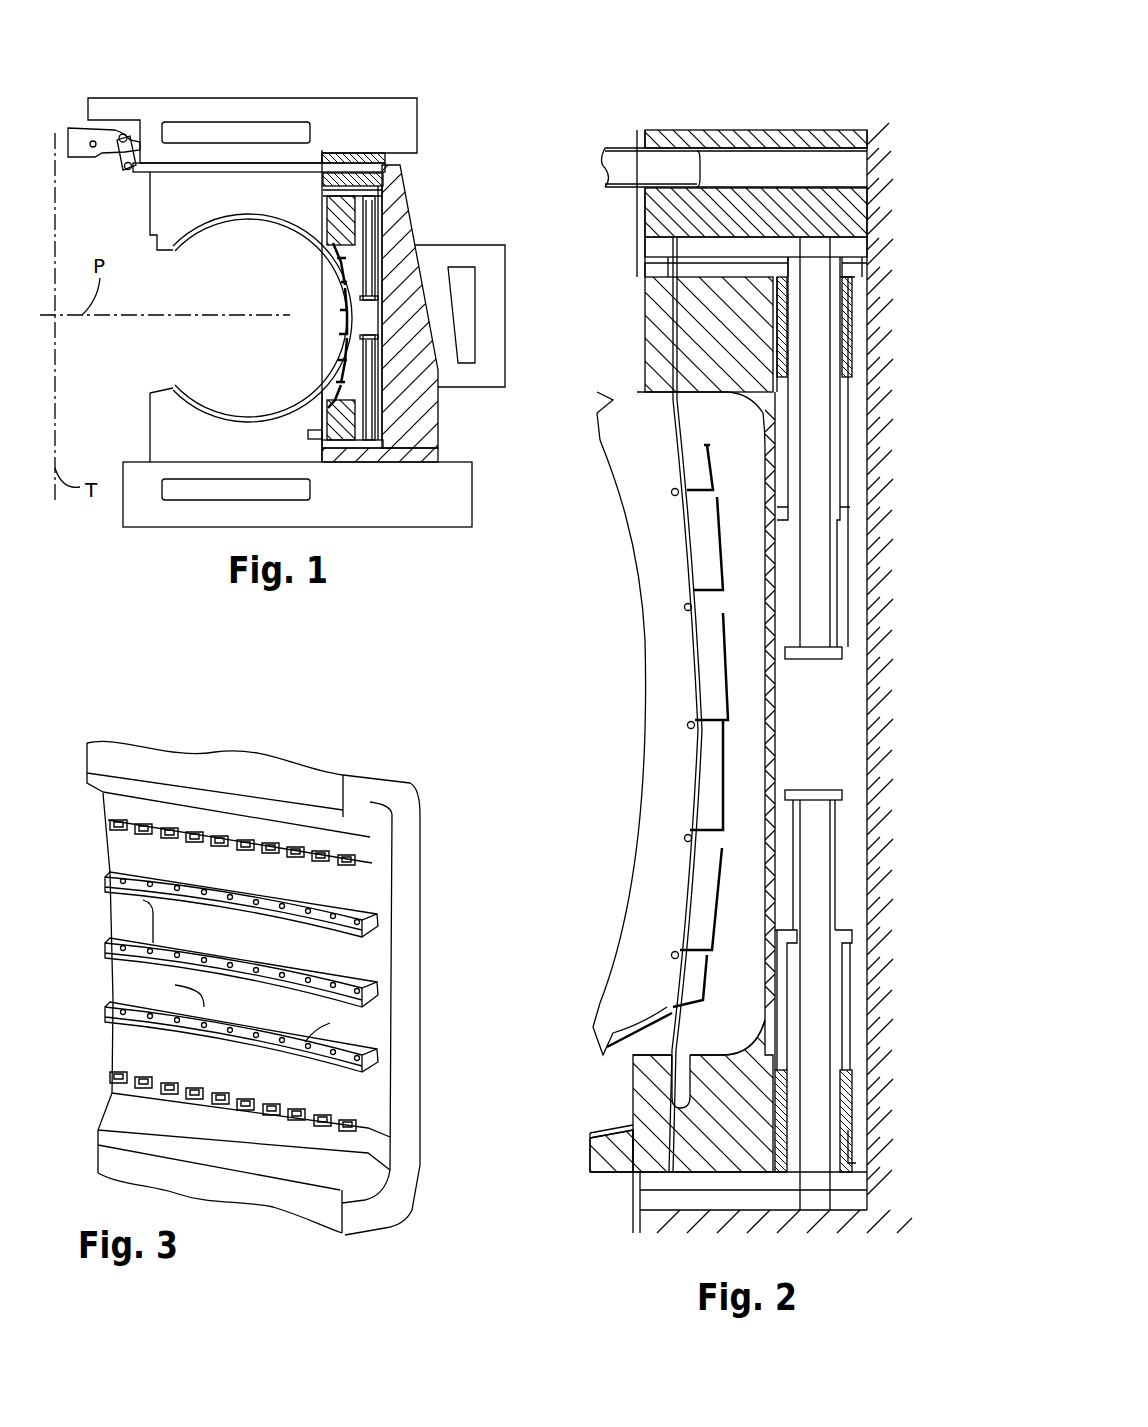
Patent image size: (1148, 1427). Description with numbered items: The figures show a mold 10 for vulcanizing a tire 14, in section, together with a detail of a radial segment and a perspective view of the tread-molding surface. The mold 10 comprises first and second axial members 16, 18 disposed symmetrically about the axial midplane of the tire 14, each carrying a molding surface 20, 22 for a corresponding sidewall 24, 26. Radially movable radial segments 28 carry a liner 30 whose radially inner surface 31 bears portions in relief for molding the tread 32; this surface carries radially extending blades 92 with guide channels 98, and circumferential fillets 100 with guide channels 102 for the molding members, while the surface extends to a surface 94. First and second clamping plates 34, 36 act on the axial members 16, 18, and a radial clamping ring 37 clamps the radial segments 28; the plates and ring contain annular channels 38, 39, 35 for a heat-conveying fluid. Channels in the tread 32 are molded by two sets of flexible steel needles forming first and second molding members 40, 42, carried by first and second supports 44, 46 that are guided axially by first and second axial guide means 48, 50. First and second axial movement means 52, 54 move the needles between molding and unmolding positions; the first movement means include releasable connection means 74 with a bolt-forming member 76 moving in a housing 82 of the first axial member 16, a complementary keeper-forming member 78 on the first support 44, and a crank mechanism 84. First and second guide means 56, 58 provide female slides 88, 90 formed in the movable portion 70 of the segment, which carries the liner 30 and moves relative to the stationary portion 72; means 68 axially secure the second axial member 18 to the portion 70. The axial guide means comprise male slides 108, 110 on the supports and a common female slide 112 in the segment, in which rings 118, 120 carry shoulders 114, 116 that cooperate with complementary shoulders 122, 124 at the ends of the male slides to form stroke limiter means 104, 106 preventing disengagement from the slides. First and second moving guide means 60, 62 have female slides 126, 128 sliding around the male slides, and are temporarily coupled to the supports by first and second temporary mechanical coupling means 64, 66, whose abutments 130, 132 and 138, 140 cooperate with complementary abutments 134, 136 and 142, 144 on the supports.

In FIG. 1, the mold 10 is at (206, 58).
In FIG. 1, the vulcanized tire 14 is at (158, 355).
In FIG. 2, the vulcanized tire 14 is at (608, 850).
In FIG. 1, the first axial member 16 is at (157, 207).
In FIG. 1, the second axial member 18 is at (165, 443).
In FIG. 1, the molding surface 20 is at (232, 225).
In FIG. 1, the molding surface 22 is at (225, 413).
In FIG. 1, the sidewall 24 is at (258, 213).
In FIG. 1, the sidewall 26 is at (172, 395).
In FIG. 1, the radial segment 28 is at (465, 231).
In FIG. 3, the radial segment 28 is at (450, 965).
In FIG. 1, the liner 30 is at (342, 265).
In FIG. 2, the liner 30 is at (740, 743).
In FIG. 3, the liner 30 is at (383, 876).
In FIG. 1, the radially inner surface 31 is at (342, 378).
In FIG. 2, the radially inner surface 31 is at (727, 635).
In FIG. 3, the radially inner surface 31 is at (360, 890).
In FIG. 1, the tread 32 is at (333, 310).
In FIG. 2, the tread 32 is at (740, 665).
In FIG. 1, the first clamping plate 34 is at (231, 108).
In FIG. 1, the annular channel 35 is at (467, 343).
In FIG. 1, the second clamping plate 36 is at (137, 505).
In FIG. 1, the radial clamping ring 37 is at (495, 330).
In FIG. 1, the annular channel 38 is at (271, 130).
In FIG. 1, the annular channel 39 is at (185, 494).
In FIG. 1, the first molding member 40 is at (342, 247).
In FIG. 2, the first molding member 40 is at (677, 407).
In FIG. 1, the second molding member 42 is at (333, 392).
In FIG. 2, the second molding member 42 is at (597, 1025).
In FIG. 1, the first support 44 is at (405, 178).
In FIG. 2, the first support 44 is at (884, 192).
In FIG. 1, the second support 46 is at (408, 447).
In FIG. 2, the second support 46 is at (832, 1232).
In FIG. 1, the first axial guide means 48 is at (415, 230).
In FIG. 2, the first axial guide means 48 is at (887, 325).
In FIG. 1, the second axial guide means 50 is at (415, 410).
In FIG. 2, the second axial guide means 50 is at (885, 1030).
In FIG. 1, the first axial movement means 52 is at (415, 158).
In FIG. 1, the second axial movement means 54 is at (372, 472).
In FIG. 2, the first guide means 56 is at (648, 327).
In FIG. 2, the second guide means 58 is at (645, 1095).
In FIG. 2, the first moving guide means 60 is at (657, 268).
In FIG. 2, the second moving guide means 62 is at (657, 1180).
In FIG. 1, the first temporary mechanical coupling means 64 is at (415, 279).
In FIG. 2, the first temporary mechanical coupling means 64 is at (885, 508).
In FIG. 1, the second temporary mechanical coupling means 66 is at (440, 390).
In FIG. 2, the second temporary mechanical coupling means 66 is at (885, 945).
In FIG. 1, the axial securing means 68 is at (285, 441).
In FIG. 1, the movable portion 70 is at (320, 207).
In FIG. 2, the movable portion 70 is at (645, 358).
In FIG. 3, the movable portion 70 is at (360, 790).
In FIG. 1, the stationary portion 72 is at (347, 455).
In FIG. 1, the releasable connection means 74 is at (360, 133).
In FIG. 1, the bolt-forming member 76 is at (198, 167).
In FIG. 1, the keeper-forming member 78 is at (373, 155).
In FIG. 1, the housing 82 is at (352, 148).
In FIG. 1, the crank mechanism 84 is at (108, 115).
In FIG. 2, the female slide 88 is at (685, 325).
In FIG. 2, the female slide 90 is at (675, 1105).
In FIG. 3, the blades 92 is at (372, 858).
In FIG. 3, the bottom slab 94 is at (398, 1128).
In FIG. 3, the channels 98 is at (170, 826).
In FIG. 3, the circumferential fillets 100 is at (372, 925).
In FIG. 3, the guide channels 102 is at (143, 900).
In FIG. 2, the first axial stroke limiter means 104 is at (890, 370).
In FIG. 2, the second axial stroke limiter means 106 is at (884, 916).
In FIG. 2, the male slide 108 is at (813, 562).
In FIG. 2, the male slide 110 is at (812, 847).
In FIG. 2, the female slide 112 is at (815, 707).
In FIG. 2, the first shoulder 114 is at (873, 402).
In FIG. 2, the second shoulder 116 is at (850, 1062).
In FIG. 2, the ring 118 is at (858, 280).
In FIG. 2, the ring 120 is at (845, 1130).
In FIG. 2, the shoulder 122 is at (833, 637).
In FIG. 2, the shoulder 124 is at (837, 790).
In FIG. 2, the female slide 126 is at (837, 478).
In FIG. 2, the female slide 128 is at (830, 1030).
In FIG. 2, the axial abutment 130 is at (872, 276).
In FIG. 2, the axial abutment 132 is at (782, 512).
In FIG. 2, the axial abutment 134 is at (750, 245).
In FIG. 2, the axial abutment 136 is at (793, 643).
In FIG. 2, the axial abutment 138 is at (853, 1180).
In FIG. 2, the axial abutment 140 is at (783, 933).
In FIG. 2, the axial abutment 142 is at (732, 1200).
In FIG. 2, the axial abutment 144 is at (793, 803).